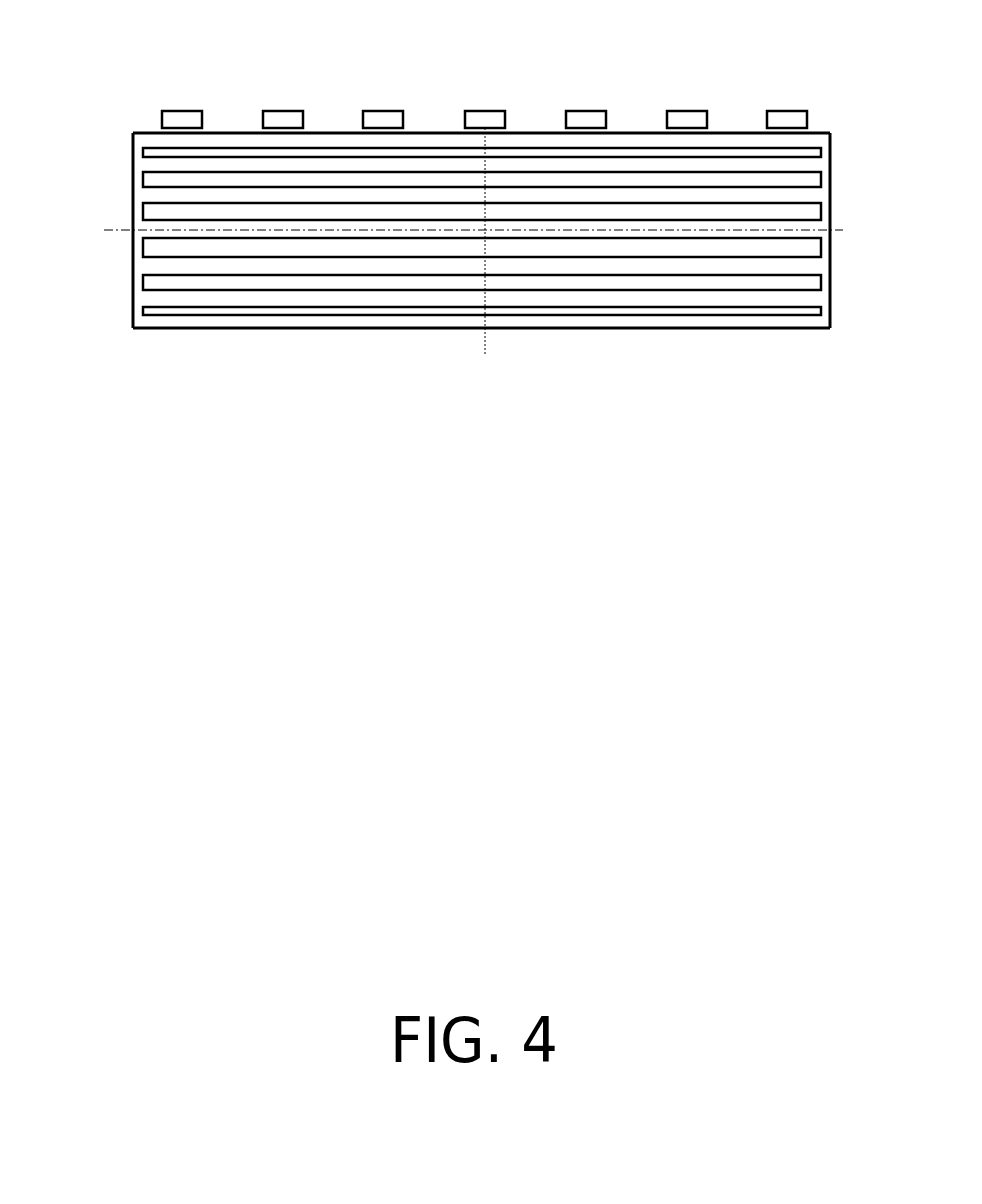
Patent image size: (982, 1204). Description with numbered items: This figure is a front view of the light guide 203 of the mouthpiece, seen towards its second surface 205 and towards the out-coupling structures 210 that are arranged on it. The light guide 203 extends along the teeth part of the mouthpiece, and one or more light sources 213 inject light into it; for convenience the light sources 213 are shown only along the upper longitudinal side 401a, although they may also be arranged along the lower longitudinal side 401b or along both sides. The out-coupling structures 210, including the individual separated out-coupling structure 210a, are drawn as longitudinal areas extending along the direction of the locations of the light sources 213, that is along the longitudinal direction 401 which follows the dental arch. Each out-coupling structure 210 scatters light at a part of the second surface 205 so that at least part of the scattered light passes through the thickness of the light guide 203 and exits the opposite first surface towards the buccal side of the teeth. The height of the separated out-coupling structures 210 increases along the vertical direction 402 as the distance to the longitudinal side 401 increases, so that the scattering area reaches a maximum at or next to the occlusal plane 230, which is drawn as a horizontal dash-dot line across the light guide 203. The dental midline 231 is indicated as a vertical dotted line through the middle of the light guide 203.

The light guide 203 is at (505, 210).
The second surface 205 is at (505, 210).
The light sources 213 is at (385, 108).
The longitudinal direction 401 is at (505, 234).
The upper longitudinal side 401a is at (530, 133).
The lower longitudinal side 401b is at (612, 333).
The vertical direction 402 is at (832, 188).
The out-coupling structures 210 is at (432, 191).
The out-coupling structure 210a is at (157, 178).
The occlusal plane 230 is at (493, 230).
The dental midline 231 is at (485, 255).